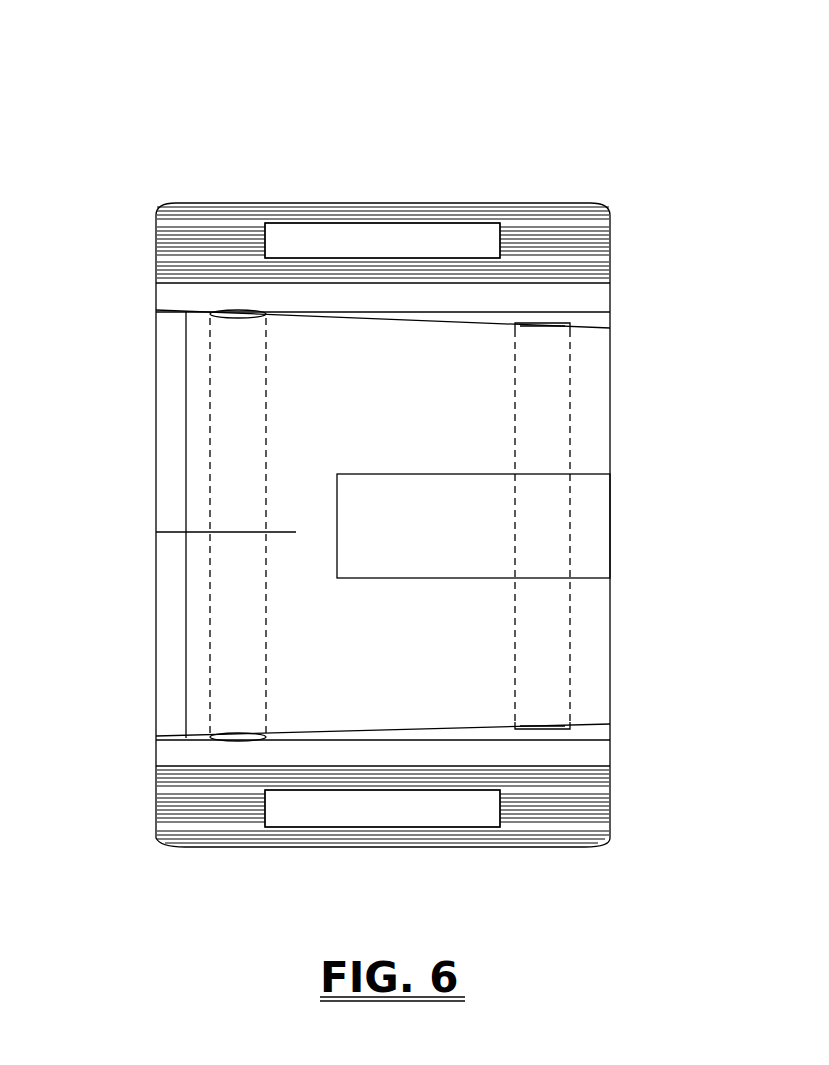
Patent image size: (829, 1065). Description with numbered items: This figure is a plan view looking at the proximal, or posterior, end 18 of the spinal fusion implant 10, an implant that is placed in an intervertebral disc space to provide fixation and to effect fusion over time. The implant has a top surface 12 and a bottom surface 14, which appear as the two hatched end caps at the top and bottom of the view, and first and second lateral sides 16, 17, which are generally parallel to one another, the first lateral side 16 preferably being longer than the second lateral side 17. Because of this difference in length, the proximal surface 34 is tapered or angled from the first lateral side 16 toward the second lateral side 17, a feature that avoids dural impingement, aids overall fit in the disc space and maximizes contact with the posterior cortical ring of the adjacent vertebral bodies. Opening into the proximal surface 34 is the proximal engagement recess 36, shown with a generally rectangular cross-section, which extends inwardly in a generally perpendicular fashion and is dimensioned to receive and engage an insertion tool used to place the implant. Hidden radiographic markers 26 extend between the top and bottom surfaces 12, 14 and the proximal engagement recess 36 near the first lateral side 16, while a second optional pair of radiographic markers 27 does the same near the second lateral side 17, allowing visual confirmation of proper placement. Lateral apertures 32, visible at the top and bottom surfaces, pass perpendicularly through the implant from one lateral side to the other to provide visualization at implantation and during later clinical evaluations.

The spinal fusion implant 10 is at (692, 112).
The top surface 12 is at (536, 232).
The bottom surface 14 is at (228, 850).
The first lateral side 16 is at (612, 330).
The second lateral side 17 is at (155, 418).
The proximal end 18 is at (298, 532).
The radiographic markers 26 is at (555, 414).
The radiographic markers 27 is at (228, 616).
The lateral apertures 32 is at (428, 232).
The proximal surface 34 is at (450, 424).
The proximal engagement recess 36 is at (583, 535).